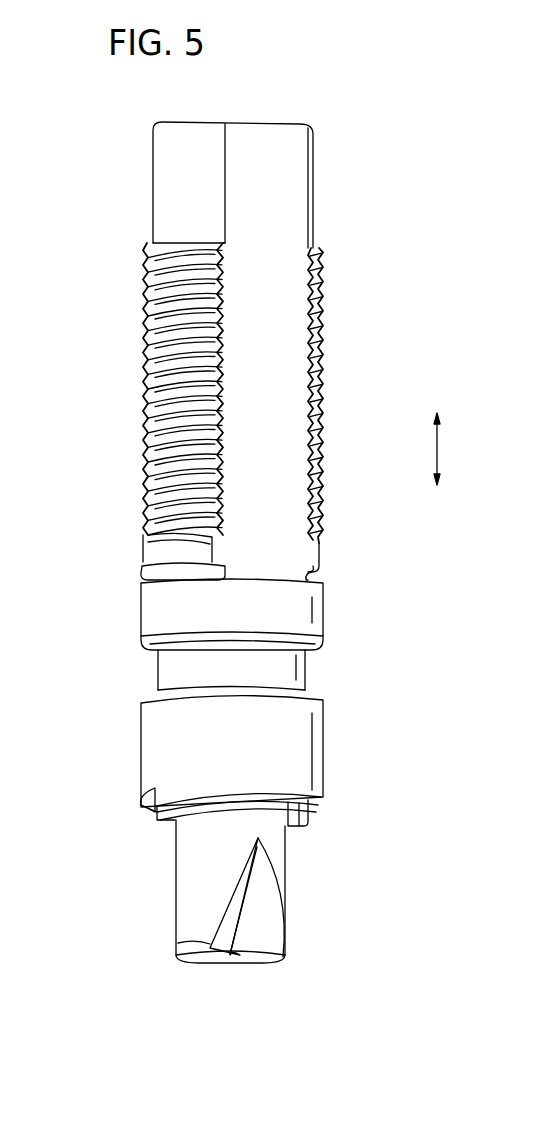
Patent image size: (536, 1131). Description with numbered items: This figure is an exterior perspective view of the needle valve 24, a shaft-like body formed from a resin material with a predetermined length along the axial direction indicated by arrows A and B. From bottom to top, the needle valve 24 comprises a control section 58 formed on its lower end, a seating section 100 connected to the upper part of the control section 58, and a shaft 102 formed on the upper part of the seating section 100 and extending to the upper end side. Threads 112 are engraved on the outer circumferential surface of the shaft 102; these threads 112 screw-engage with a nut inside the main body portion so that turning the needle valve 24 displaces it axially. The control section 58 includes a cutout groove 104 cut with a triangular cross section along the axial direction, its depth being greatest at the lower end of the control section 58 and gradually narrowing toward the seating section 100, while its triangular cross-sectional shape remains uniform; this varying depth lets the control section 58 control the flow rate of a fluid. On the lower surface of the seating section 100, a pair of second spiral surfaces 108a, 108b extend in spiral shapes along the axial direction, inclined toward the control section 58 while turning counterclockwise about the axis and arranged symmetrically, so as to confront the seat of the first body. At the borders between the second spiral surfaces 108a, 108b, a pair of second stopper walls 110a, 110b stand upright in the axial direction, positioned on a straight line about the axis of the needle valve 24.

The needle valve 24 is at (340, 184).
The shaft 102 is at (240, 197).
The threads 112 is at (168, 376).
The seating section 100 is at (155, 733).
The second stopper wall 110b is at (145, 798).
The second spiral surface 108b is at (150, 806).
The second spiral surface 108a is at (313, 800).
The second stopper wall 110a is at (300, 826).
The control section 58 is at (196, 889).
The cutout groove 104 is at (265, 918).